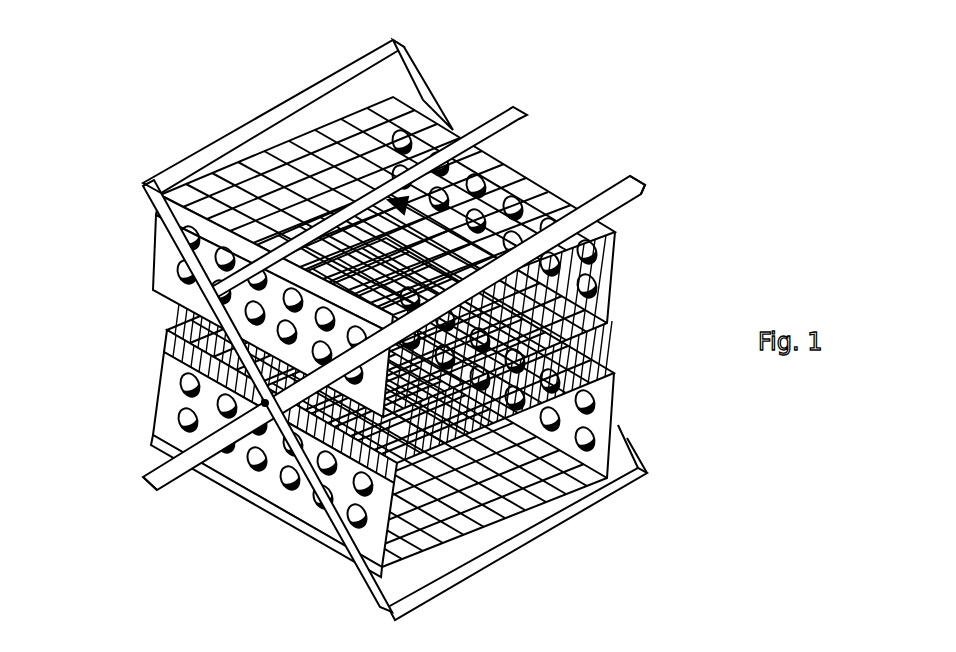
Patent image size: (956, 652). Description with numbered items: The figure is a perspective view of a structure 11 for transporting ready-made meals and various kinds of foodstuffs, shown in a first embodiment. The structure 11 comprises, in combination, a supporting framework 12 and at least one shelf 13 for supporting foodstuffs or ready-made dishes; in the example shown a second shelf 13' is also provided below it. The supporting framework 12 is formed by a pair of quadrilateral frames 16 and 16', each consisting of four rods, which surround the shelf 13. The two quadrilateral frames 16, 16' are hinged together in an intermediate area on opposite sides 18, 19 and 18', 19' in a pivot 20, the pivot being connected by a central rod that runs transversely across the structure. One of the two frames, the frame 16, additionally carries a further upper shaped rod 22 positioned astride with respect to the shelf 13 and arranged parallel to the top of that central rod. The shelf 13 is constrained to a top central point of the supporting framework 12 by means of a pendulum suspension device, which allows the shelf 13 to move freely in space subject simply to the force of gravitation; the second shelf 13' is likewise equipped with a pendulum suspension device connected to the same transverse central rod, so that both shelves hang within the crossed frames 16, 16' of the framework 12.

The structure for transporting foodstuffs 11 is at (655, 117).
The supporting framework 12 is at (358, 596).
The shelf 13 is at (336, 257).
The second shelf 13' is at (337, 407).
The quadrilateral frame 16 is at (267, 396).
The quadrilateral frame 16' is at (107, 498).
The side 18 is at (104, 181).
The side 18' is at (321, 99).
The side 19 is at (351, 333).
The side 19' is at (677, 214).
The pivot 20 is at (262, 407).
The upper shaped rod 22 is at (523, 116).